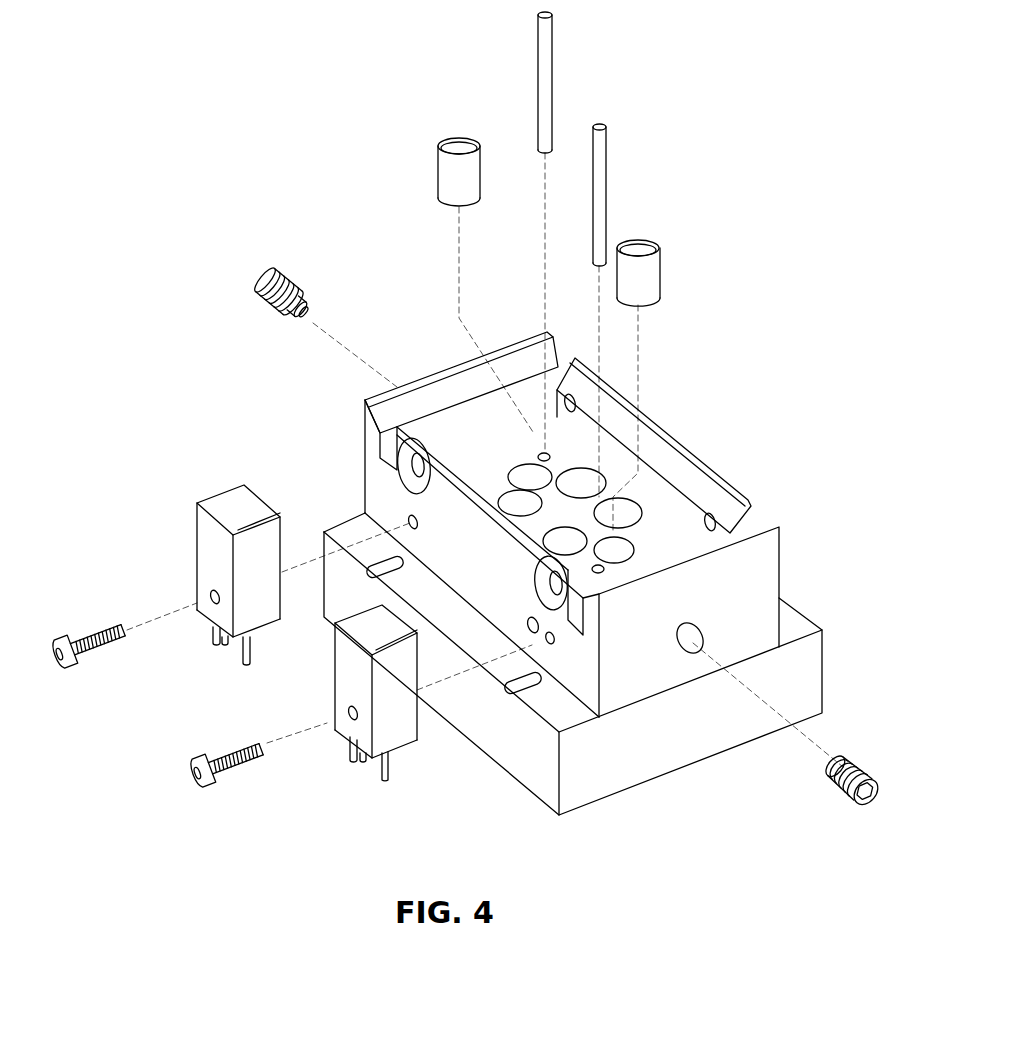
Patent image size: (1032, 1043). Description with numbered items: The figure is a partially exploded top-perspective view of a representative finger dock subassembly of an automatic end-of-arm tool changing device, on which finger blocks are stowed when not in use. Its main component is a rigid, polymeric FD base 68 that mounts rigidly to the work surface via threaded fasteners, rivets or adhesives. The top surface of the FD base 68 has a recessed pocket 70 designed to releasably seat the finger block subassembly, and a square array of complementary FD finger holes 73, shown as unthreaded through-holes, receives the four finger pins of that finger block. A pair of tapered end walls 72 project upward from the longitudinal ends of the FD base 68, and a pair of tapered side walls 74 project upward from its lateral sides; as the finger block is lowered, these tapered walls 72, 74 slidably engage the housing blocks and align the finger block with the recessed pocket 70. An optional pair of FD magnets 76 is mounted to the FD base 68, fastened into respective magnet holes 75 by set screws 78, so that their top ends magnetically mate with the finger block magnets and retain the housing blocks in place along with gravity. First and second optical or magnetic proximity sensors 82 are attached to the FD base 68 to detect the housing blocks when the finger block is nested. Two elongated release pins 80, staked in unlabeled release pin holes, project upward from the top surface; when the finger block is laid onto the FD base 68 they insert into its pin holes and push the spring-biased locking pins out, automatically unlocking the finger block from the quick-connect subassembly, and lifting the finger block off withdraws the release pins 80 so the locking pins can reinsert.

The FD base 68 is at (816, 653).
The recessed pocket 70 is at (385, 412).
The tapered end walls 72 is at (500, 350).
The FD finger holes 73 is at (587, 477).
The tapered side walls 74 is at (414, 438).
The magnet holes 75 is at (518, 470).
The FD magnets 76 is at (437, 153).
The set screws 78 is at (267, 312).
The release pins 80 is at (553, 27).
The proximity sensors 82 is at (205, 585).